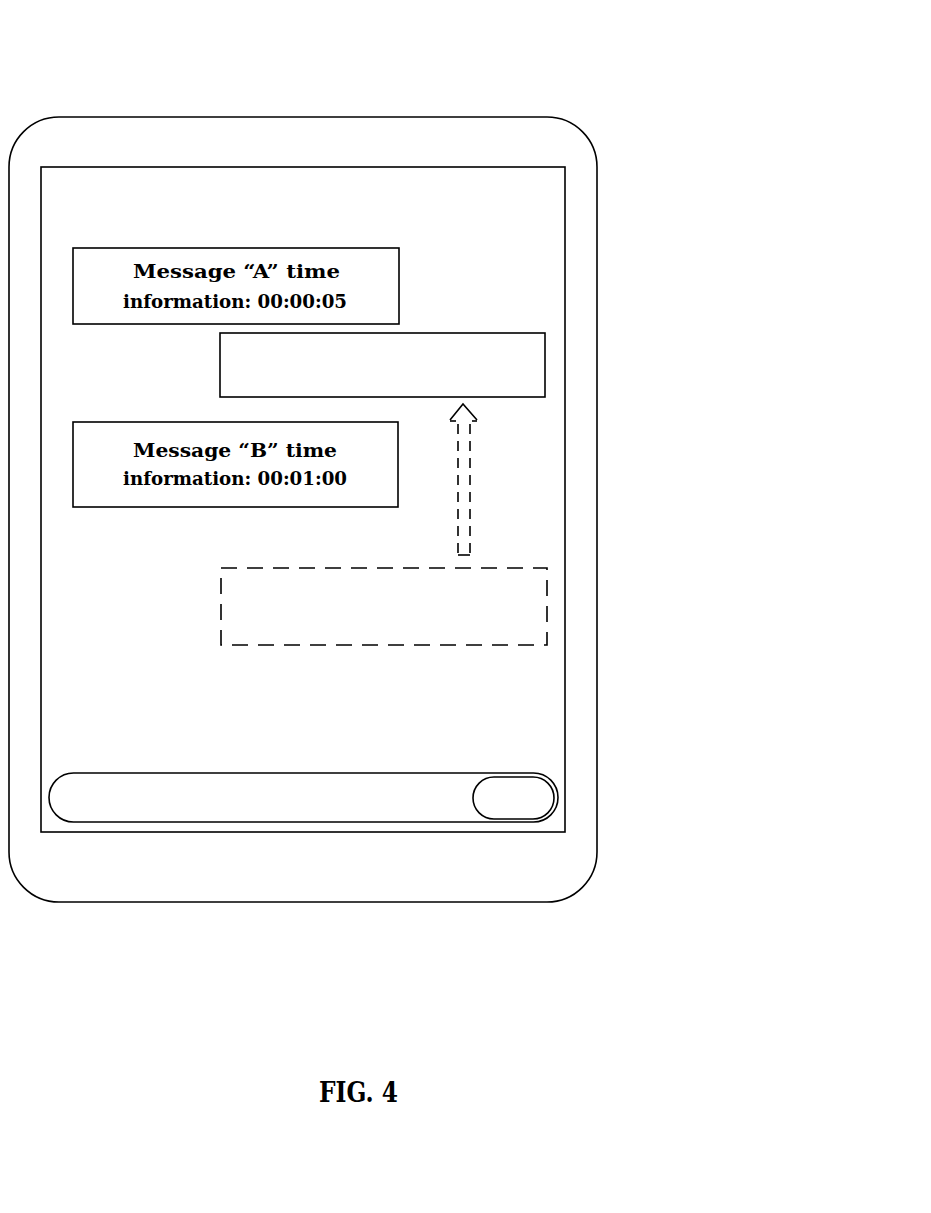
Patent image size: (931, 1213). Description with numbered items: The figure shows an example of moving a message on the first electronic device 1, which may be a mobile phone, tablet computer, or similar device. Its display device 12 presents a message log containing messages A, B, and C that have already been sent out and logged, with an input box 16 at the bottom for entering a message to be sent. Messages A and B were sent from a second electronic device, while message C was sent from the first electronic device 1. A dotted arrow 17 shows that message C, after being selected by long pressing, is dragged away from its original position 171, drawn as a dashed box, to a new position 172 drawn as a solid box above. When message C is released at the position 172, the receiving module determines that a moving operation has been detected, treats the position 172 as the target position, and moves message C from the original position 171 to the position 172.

The first electronic device 1 is at (489, 117).
The display device 12 is at (181, 185).
The input box 16 is at (210, 803).
The dotted arrow 17 is at (470, 502).
The original position 171 is at (545, 600).
The position 172 is at (545, 355).